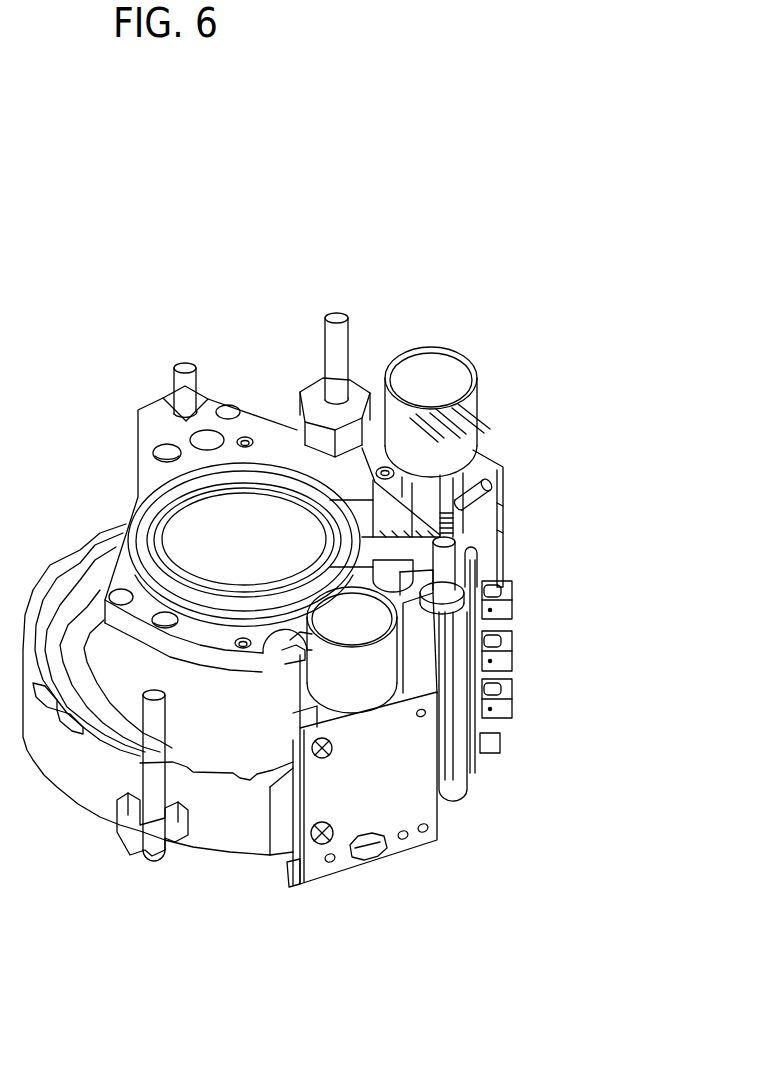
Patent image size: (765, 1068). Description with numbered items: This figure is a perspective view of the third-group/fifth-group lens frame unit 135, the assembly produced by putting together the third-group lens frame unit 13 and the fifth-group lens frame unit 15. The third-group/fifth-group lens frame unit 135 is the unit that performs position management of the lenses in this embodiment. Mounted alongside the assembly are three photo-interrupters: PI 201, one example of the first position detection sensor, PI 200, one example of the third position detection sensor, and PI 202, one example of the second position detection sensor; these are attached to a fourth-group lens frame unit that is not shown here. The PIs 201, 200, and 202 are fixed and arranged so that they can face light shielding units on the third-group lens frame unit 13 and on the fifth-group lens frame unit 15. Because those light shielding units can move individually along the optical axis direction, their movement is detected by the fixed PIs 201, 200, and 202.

The third-group lens frame unit 13 is at (142, 375).
The fifth-group lens frame unit 15 is at (47, 540).
The third-group/fifth-group lens frame unit 135 is at (537, 291).
The PI 200 is at (512, 650).
The PI 201 is at (512, 595).
The PI 202 is at (512, 702).